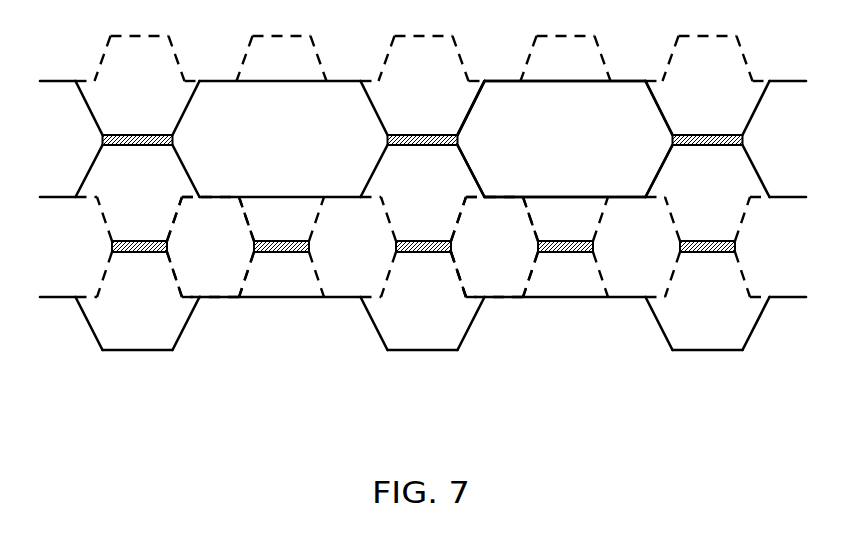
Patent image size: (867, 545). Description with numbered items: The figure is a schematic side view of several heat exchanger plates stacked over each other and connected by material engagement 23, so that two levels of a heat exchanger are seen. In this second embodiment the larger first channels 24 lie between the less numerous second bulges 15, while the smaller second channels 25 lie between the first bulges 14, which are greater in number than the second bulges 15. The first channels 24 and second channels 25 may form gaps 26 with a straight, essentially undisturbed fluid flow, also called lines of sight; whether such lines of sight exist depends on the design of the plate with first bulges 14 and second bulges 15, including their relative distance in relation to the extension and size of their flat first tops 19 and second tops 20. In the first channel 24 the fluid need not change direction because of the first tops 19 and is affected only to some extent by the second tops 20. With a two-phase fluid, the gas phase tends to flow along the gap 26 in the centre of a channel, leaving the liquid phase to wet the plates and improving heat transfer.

The first bulges 14 is at (230, 216).
The second bulges 15 is at (493, 116).
The first tops 19 is at (292, 229).
The second tops 20 is at (430, 123).
The material engagement 23 is at (119, 254).
The first channels 24 is at (632, 98).
The second channels 25 is at (452, 282).
The gaps 26 is at (482, 254).